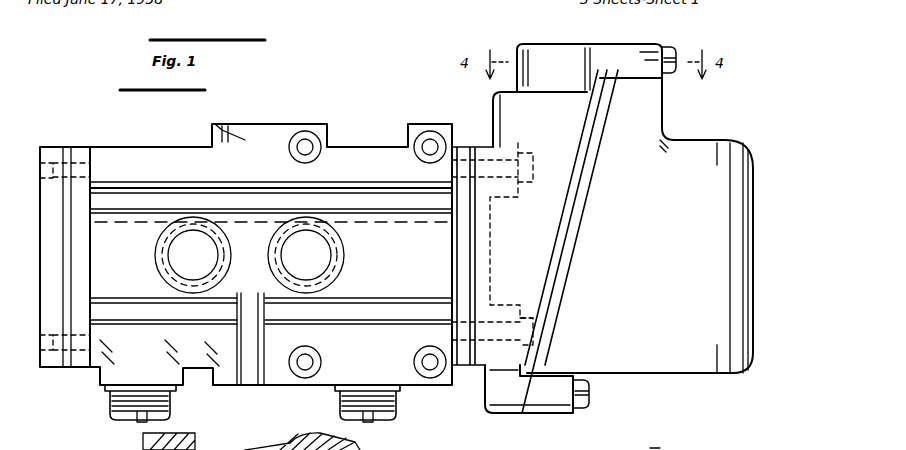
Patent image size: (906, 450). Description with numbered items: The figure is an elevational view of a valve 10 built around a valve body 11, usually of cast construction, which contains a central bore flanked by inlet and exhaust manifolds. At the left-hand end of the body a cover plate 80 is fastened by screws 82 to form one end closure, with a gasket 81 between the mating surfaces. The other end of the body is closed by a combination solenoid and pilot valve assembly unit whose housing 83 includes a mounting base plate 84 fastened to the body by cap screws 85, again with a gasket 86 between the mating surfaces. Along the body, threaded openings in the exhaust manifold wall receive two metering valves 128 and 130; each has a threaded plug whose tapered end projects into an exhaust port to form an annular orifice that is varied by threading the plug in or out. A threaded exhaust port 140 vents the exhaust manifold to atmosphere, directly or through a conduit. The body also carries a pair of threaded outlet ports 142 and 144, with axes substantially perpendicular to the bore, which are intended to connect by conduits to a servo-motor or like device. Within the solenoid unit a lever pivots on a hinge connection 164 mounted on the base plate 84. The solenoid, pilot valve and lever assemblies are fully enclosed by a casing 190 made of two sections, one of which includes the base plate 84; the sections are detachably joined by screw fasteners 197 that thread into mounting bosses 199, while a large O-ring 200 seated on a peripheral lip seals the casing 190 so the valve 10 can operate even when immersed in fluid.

The valve 10 is at (274, 398).
The valve body 11 is at (369, 158).
The cover plate 80 is at (47, 210).
The gasket 81 is at (67, 266).
The screws 82 is at (50, 160).
The combination solenoid and pilot valve assembly unit housing 83 is at (568, 422).
The mounting base plate 84 is at (481, 296).
The cap screws 85 is at (527, 157).
The gasket 86 is at (470, 190).
The metering valve 128 is at (105, 416).
The metering valve 130 is at (336, 401).
The threaded exhaust port 140 is at (243, 388).
The threaded outlet port 142 is at (189, 268).
The threaded outlet port 144 is at (303, 268).
The hinge connection 164 is at (641, 443).
The casing 190 is at (676, 131).
The screw fasteners 197 is at (672, 48).
The mounting bosses 199 is at (598, 58).
The O-ring 200 is at (568, 228).